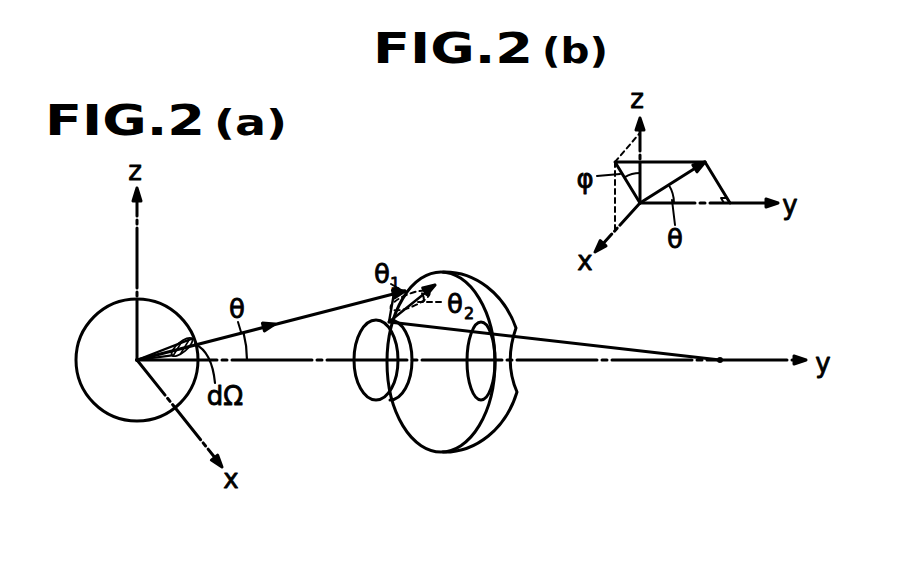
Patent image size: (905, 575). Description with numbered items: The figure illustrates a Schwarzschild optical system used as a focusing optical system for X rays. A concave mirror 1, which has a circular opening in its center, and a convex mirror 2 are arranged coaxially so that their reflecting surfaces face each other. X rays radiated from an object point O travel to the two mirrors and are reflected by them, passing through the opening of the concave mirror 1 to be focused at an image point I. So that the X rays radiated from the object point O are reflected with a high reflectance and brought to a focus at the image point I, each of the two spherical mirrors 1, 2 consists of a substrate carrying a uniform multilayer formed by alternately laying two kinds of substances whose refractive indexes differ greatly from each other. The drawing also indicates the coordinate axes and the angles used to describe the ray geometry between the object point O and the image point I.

The concave mirror 1 is at (500, 421).
The convex mirror 2 is at (374, 403).
The object point O is at (124, 375).
The image point I is at (720, 378).